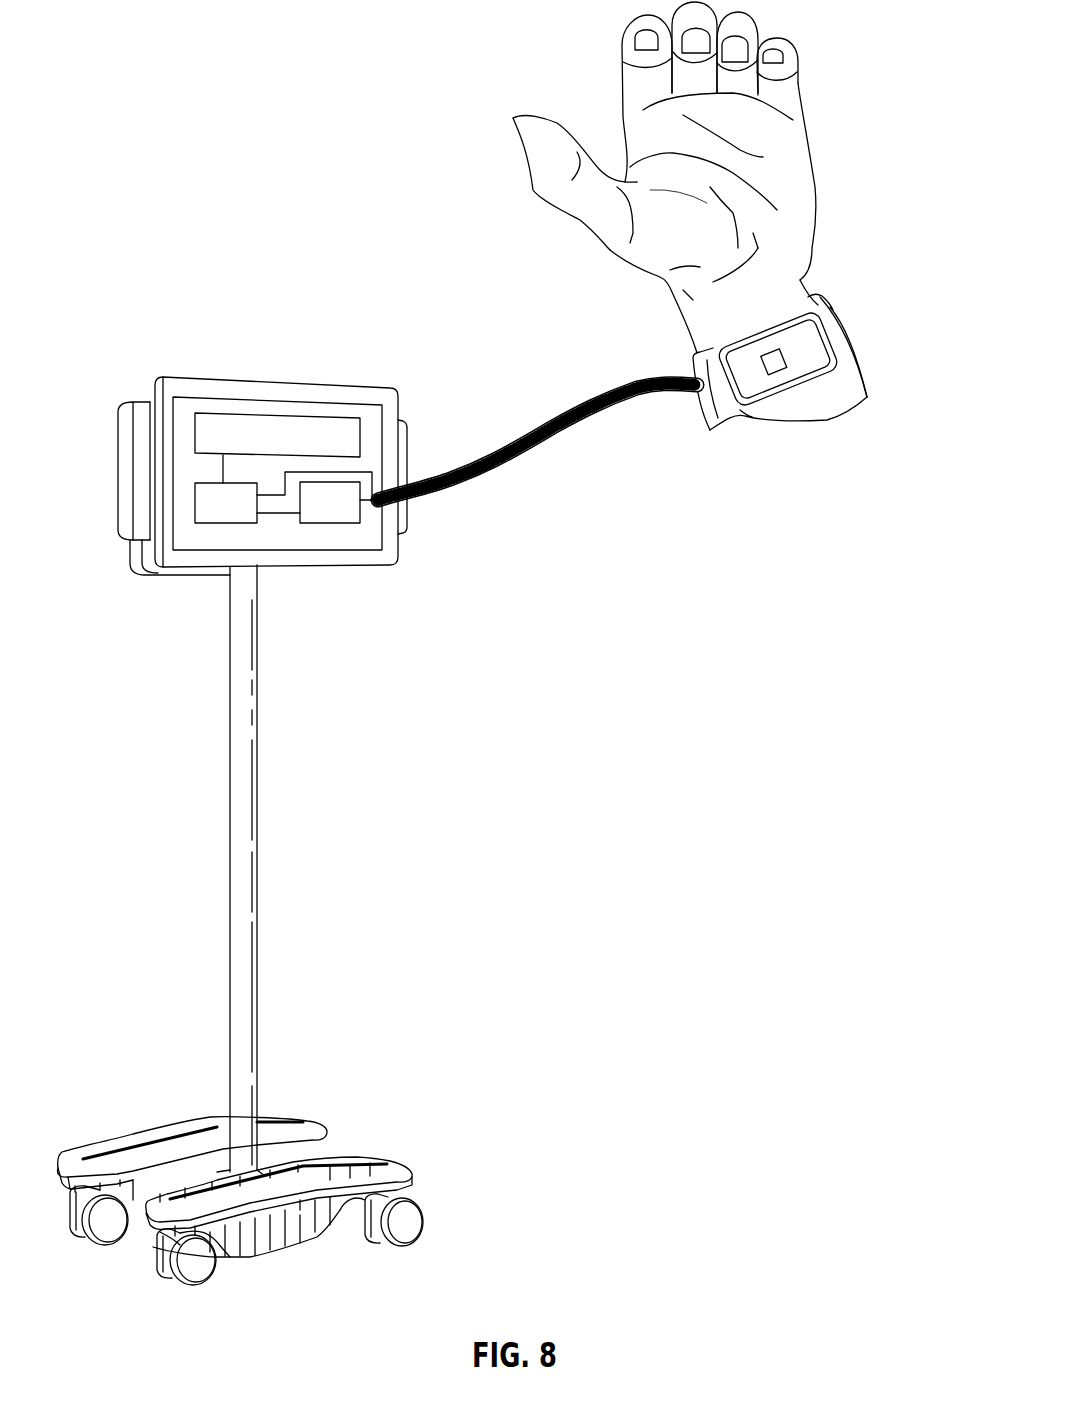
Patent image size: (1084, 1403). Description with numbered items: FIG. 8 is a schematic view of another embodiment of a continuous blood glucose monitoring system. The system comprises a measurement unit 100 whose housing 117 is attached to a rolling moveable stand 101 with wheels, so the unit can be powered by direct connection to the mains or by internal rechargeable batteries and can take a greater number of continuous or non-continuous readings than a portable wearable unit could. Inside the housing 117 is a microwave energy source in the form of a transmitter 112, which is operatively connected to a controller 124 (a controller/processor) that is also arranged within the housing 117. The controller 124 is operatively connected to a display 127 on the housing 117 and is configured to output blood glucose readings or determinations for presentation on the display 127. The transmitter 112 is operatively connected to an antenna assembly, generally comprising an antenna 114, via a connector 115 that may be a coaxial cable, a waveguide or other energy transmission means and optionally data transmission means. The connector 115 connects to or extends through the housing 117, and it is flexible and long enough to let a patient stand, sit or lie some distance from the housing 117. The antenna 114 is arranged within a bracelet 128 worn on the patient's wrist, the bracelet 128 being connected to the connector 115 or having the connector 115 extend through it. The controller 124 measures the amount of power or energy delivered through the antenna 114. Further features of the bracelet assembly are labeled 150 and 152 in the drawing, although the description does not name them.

The measurement unit 100 is at (860, 80).
The rolling moveable stand 101 is at (257, 842).
The transmitter 112 is at (330, 497).
The antenna 114 is at (830, 368).
The connector 115 is at (500, 452).
The housing 117 is at (263, 482).
The controller 124 is at (215, 510).
The display 127 is at (223, 430).
The bracelet 128 is at (818, 308).
The strap fastener 150 is at (747, 417).
The sensor panel 152 is at (800, 370).